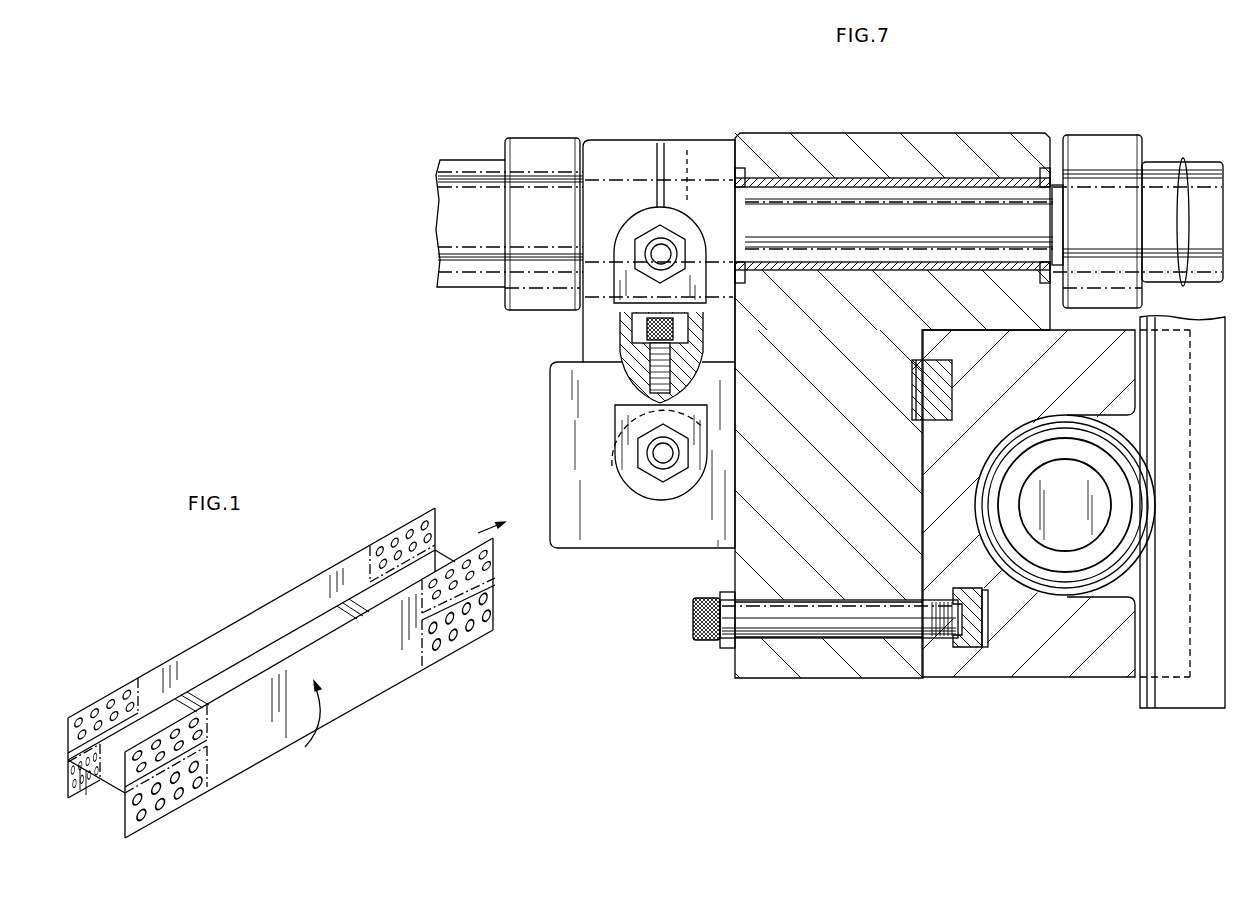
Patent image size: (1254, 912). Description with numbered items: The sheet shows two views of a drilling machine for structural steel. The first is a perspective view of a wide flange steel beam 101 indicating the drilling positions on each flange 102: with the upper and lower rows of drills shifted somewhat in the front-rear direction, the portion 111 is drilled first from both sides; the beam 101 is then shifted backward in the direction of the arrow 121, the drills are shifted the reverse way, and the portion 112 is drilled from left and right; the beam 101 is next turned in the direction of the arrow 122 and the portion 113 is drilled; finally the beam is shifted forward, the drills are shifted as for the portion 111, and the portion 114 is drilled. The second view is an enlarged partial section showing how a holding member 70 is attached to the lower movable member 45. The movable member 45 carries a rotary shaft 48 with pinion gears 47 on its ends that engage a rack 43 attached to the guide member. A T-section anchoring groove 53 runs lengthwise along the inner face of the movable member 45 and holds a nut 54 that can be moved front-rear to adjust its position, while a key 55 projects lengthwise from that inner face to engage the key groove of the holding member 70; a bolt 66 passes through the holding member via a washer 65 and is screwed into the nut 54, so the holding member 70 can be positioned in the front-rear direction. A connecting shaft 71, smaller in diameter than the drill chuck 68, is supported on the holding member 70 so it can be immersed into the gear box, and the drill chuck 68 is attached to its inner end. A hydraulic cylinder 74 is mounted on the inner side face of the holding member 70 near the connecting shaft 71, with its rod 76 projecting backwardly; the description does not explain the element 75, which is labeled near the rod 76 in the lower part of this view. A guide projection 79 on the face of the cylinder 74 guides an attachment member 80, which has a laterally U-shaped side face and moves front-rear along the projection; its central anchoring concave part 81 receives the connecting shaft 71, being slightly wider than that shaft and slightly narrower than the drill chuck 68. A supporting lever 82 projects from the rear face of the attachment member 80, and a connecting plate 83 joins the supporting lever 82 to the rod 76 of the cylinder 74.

In FIG. 1, the wide flange steel beam 101 is at (291, 593).
In FIG. 1, the flange 102 is at (217, 643).
In FIG. 1, the portion 111 is at (478, 643).
In FIG. 1, the portion 112 is at (107, 792).
In FIG. 1, the portion 113 is at (115, 693).
In FIG. 1, the portion 114 is at (400, 527).
In FIG. 1, the arrow 121 is at (505, 531).
In FIG. 1, the arrow 122 is at (329, 707).
In FIG. 7, the rack 43 is at (1212, 388).
In FIG. 7, the lower movable member 45 is at (1005, 343).
In FIG. 7, the pinion gear 47 is at (1077, 443).
In FIG. 7, the rotary shaft 48 is at (1036, 513).
In FIG. 7, the anchoring groove 53 is at (982, 612).
In FIG. 7, the nut 54 is at (963, 591).
In FIG. 7, the key 55 is at (946, 400).
In FIG. 7, the washer 65 is at (732, 593).
In FIG. 7, the bolt 66 is at (853, 611).
In FIG. 7, the drill chuck 68 is at (460, 167).
In FIG. 7, the holding member 70 is at (1003, 135).
In FIG. 7, the connecting shaft 71 is at (627, 200).
In FIG. 7, the hydraulic cylinder 74 is at (555, 468).
In FIG. 7, the nut 75 is at (627, 452).
In FIG. 7, the rod 76 is at (650, 463).
In FIG. 7, the guide projection 79 is at (688, 333).
In FIG. 7, the attachment member 80 is at (645, 146).
In FIG. 7, the anchoring concave part 81 is at (687, 150).
In FIG. 7, the supporting lever 82 is at (651, 247).
In FIG. 7, the connecting plate 83 is at (683, 220).